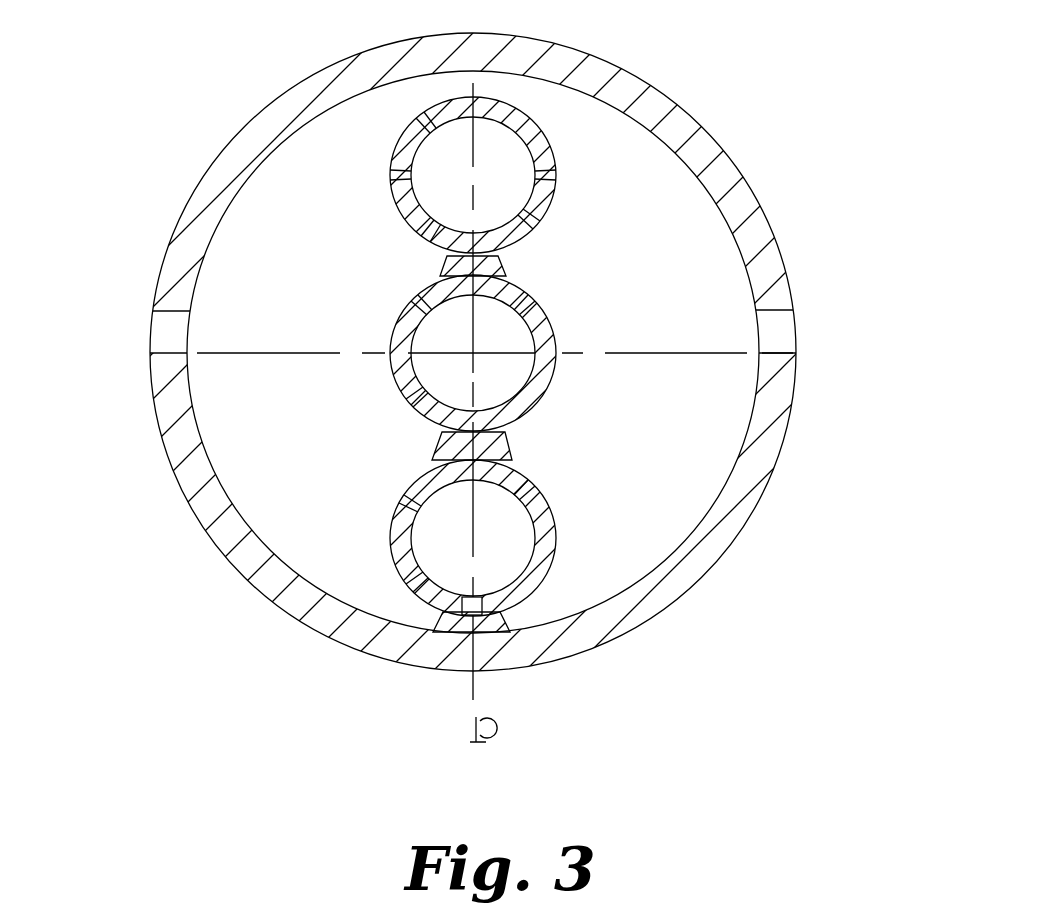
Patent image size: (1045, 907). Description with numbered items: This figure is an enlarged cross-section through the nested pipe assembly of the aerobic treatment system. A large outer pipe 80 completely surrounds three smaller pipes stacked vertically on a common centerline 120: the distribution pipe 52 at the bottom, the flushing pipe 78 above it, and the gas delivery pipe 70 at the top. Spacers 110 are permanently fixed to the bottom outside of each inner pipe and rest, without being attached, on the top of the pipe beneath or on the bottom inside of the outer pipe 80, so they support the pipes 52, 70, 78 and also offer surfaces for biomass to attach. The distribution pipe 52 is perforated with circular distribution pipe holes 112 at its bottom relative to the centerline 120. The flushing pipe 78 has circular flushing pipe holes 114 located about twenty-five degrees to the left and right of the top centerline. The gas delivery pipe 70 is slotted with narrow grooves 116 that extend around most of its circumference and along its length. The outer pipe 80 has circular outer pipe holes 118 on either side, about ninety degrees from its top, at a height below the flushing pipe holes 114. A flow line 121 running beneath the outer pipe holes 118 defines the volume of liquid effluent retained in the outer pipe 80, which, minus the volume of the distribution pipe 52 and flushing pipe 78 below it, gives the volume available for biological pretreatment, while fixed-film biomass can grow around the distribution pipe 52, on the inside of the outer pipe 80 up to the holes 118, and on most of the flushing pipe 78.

The distribution pipe 52 is at (490, 407).
The gas delivery pipe 70 is at (543, 102).
The flushing pipe 78 is at (528, 353).
The outer pipe 80 is at (472, 348).
The spacer 110 is at (453, 462).
The distribution pipe hole 112 is at (503, 632).
The flushing pipe hole 114 is at (420, 297).
The groove 116 is at (555, 128).
The outer pipe hole 118 is at (163, 330).
The centerline 120 is at (478, 513).
The flow line 121 is at (560, 353).